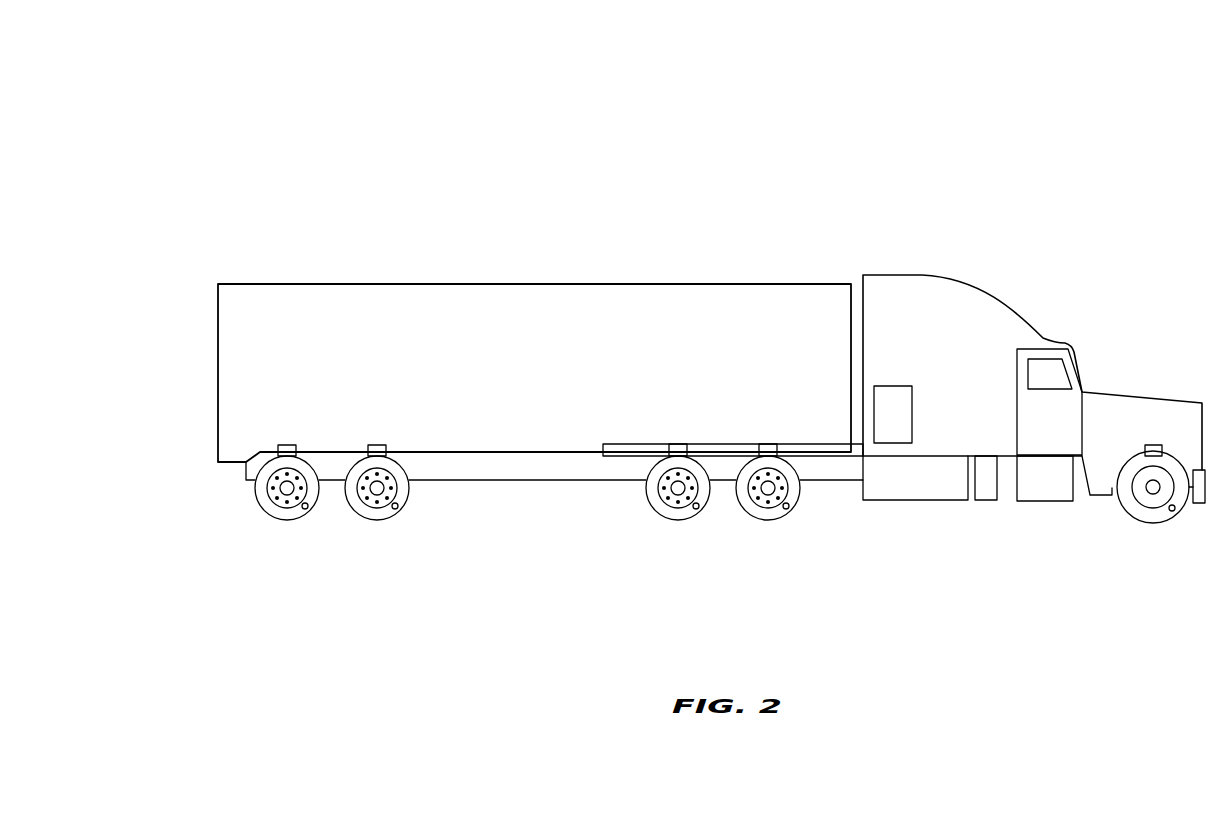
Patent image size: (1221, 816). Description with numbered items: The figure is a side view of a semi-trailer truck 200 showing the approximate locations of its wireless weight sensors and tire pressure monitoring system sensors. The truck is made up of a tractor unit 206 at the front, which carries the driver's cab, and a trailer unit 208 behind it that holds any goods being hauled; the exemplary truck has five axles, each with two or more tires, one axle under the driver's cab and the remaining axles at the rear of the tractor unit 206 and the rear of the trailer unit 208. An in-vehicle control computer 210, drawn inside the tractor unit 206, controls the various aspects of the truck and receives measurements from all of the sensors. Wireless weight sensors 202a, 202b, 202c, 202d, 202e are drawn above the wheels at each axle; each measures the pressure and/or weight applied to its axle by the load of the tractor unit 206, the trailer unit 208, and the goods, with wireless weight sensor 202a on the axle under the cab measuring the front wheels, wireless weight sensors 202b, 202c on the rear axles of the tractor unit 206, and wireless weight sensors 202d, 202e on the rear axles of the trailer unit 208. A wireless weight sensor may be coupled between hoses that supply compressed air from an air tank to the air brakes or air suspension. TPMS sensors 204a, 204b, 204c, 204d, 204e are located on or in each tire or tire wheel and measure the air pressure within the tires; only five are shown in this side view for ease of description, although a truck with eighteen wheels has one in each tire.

The semi-trailer truck 200 is at (182, 118).
The wireless weight sensor 202a is at (1150, 445).
The wireless weight sensor 202b is at (766, 444).
The wireless weight sensor 202c is at (676, 444).
The wireless weight sensor 202d is at (373, 445).
The wireless weight sensor 202e is at (283, 445).
The TPMS sensor 204a is at (1174, 510).
The TPMS sensor 204b is at (787, 508).
The TPMS sensor 204c is at (697, 508).
The TPMS sensor 204d is at (396, 508).
The TPMS sensor 204e is at (306, 508).
The tractor unit 206 is at (864, 250).
The trailer unit 208 is at (245, 250).
The in-vehicle control computer 210 is at (893, 386).